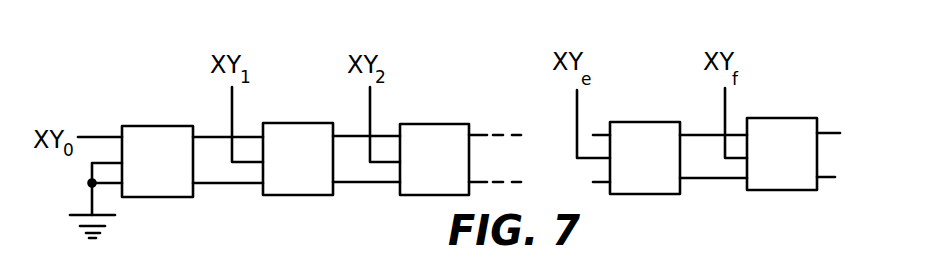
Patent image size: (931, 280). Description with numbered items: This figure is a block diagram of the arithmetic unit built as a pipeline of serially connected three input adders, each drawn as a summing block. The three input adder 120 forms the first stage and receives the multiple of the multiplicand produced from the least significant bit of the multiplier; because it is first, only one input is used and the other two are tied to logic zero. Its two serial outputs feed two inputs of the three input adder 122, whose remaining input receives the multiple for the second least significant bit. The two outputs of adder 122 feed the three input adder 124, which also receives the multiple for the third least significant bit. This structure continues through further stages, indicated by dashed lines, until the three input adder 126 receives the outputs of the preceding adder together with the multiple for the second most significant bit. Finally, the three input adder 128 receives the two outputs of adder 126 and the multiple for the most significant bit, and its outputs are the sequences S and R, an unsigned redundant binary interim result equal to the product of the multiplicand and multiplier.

The three input adder 120 is at (167, 126).
The three input adder 122 is at (308, 195).
The three input adder 124 is at (448, 124).
The three input adder 126 is at (648, 122).
The three input adder 128 is at (797, 118).